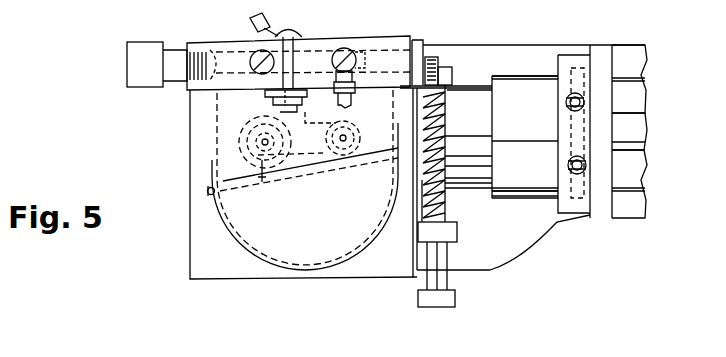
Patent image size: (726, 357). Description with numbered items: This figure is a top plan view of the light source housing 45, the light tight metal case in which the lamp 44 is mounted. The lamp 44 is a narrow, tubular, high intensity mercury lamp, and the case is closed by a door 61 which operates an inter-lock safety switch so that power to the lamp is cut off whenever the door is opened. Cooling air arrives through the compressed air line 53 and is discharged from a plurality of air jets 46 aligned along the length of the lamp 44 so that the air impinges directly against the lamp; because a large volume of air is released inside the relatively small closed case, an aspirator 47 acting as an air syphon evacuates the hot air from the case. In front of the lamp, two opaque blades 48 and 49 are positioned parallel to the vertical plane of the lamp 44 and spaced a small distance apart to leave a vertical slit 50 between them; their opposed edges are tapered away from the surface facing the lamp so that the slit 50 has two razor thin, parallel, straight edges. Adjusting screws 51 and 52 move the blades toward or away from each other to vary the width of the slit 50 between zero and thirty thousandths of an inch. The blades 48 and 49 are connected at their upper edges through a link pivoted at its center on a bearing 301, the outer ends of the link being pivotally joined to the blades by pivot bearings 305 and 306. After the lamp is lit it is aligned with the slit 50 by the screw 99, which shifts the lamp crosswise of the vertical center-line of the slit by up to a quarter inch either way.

The lamp 44 is at (358, 140).
The housing 45 is at (212, 166).
The air jets 46 is at (353, 102).
The aspirator 47 is at (263, 182).
The opaque blade 48 is at (566, 122).
The opaque blade 49 is at (570, 155).
The vertical slit 50 is at (570, 131).
The adjusting screw 51 is at (585, 98).
The adjusting screw 52 is at (587, 162).
The compressed air line 53 is at (227, 43).
The door 61 is at (366, 246).
The screw 99 is at (443, 307).
The bearing 301 is at (590, 127).
The pivot bearing 305 is at (590, 113).
The pivot bearing 306 is at (590, 153).